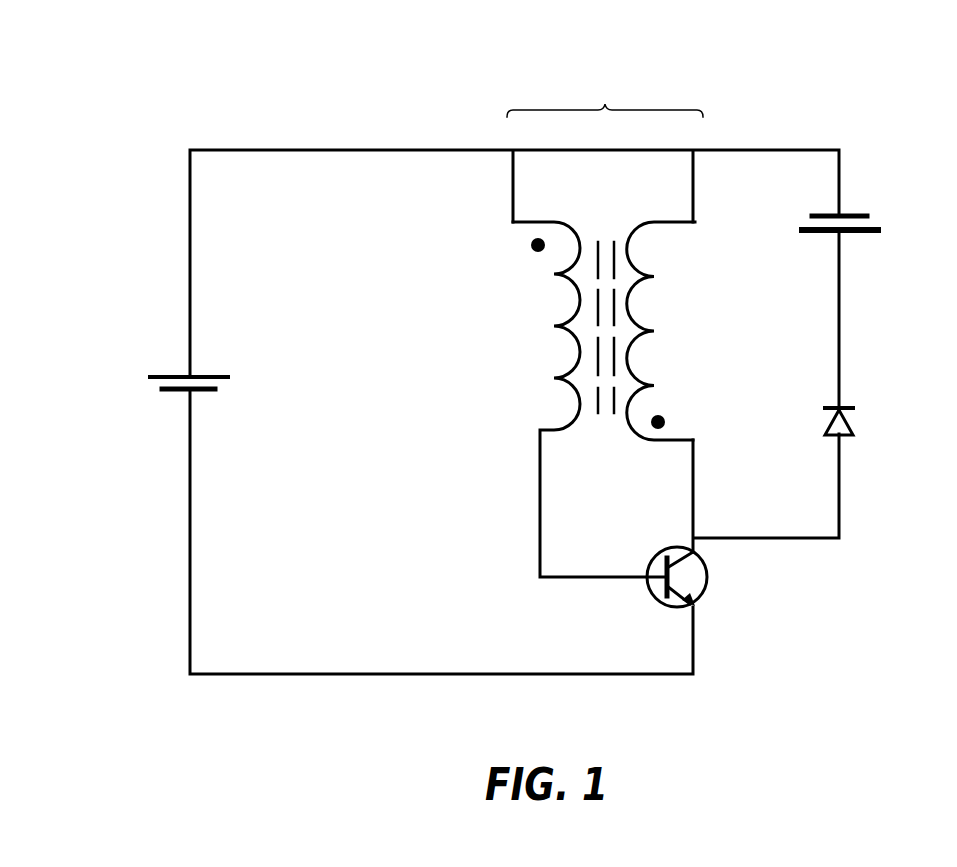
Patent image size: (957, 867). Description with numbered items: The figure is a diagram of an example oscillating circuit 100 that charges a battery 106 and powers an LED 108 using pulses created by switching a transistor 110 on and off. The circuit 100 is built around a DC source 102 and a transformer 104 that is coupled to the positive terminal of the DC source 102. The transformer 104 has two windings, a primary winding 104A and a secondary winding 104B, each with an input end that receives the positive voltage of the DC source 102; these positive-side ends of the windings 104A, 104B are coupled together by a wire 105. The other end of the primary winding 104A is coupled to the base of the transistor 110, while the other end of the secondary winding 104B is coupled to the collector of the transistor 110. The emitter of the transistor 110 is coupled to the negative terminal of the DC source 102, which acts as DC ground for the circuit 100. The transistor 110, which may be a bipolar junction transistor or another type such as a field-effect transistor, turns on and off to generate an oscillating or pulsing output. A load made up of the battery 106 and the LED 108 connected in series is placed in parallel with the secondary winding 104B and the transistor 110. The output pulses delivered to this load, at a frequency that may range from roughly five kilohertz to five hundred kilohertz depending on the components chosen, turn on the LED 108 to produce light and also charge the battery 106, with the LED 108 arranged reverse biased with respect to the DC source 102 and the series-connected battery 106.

The oscillating circuit 100 is at (78, 60).
The DC source 102 is at (228, 377).
The transformer 104 is at (582, 326).
The primary winding 104A is at (560, 319).
The secondary winding 104B is at (631, 319).
The wire 105 is at (605, 96).
The battery 106 is at (878, 230).
The LED 108 is at (853, 430).
The transistor 110 is at (650, 590).